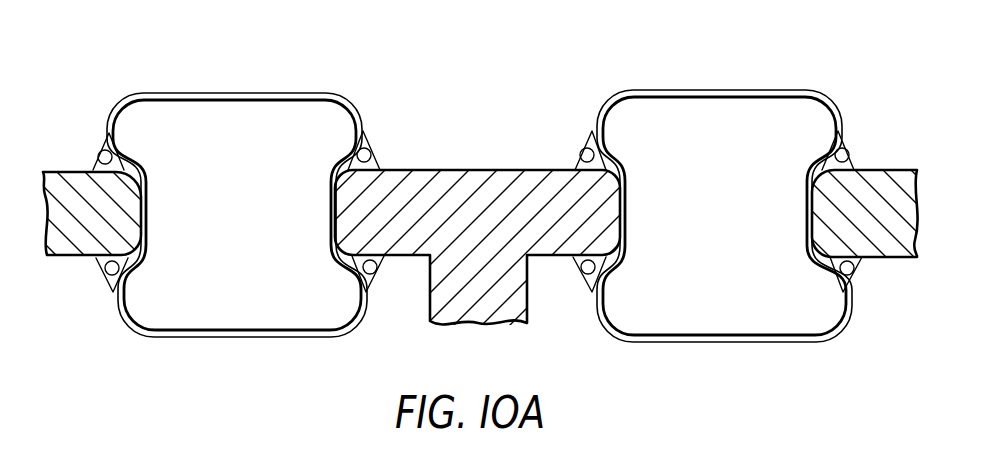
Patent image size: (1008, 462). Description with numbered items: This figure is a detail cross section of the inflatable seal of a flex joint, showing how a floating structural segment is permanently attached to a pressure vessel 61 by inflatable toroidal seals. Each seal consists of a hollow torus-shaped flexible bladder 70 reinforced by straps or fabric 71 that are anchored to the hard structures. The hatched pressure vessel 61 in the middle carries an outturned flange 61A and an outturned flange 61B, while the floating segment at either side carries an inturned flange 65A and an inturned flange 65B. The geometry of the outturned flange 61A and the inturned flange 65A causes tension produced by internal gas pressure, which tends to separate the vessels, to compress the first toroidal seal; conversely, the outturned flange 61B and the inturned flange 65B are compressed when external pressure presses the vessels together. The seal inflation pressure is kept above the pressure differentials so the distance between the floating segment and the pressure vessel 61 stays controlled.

The pressure vessel 61 is at (459, 241).
The outturned flange 61A is at (392, 184).
The outturned flange 61B is at (570, 249).
The inturned flange 65A is at (75, 253).
The inturned flange 65B is at (872, 249).
The hollow torus-shaped flexible bladder 70 is at (190, 96).
The straps or fabric 71 is at (232, 93).